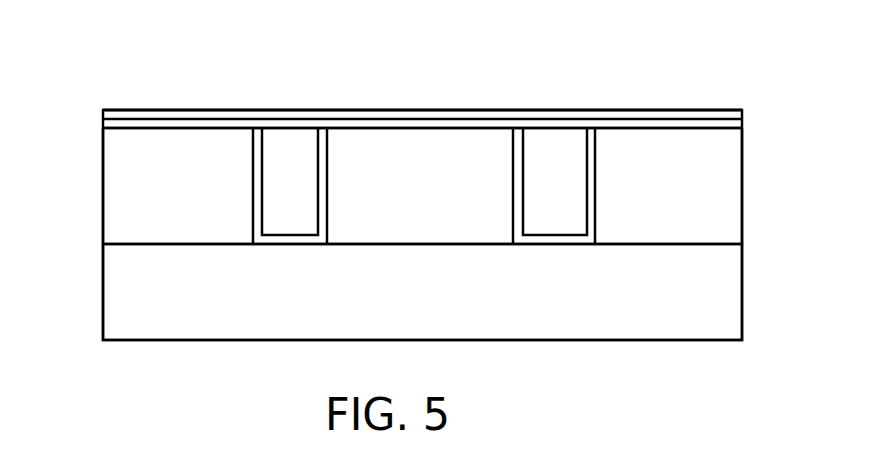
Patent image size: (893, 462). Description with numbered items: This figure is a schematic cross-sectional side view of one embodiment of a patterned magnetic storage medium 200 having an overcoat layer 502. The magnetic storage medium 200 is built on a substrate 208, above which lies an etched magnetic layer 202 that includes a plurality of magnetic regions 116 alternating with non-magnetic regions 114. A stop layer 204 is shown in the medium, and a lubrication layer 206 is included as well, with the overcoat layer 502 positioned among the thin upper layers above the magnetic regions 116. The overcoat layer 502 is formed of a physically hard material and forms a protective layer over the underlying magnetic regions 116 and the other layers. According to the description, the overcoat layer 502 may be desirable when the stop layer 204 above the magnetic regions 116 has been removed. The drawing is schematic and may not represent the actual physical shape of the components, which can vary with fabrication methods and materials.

The magnetic storage medium 200 is at (112, 64).
The etched magnetic layer 202 is at (88, 128).
The stop layer 204 is at (588, 137).
The lubrication layer 206 is at (484, 115).
The substrate 208 is at (438, 303).
The non-magnetic regions 114 is at (312, 198).
The magnetic regions 116 is at (197, 198).
The overcoat layer 502 is at (742, 125).